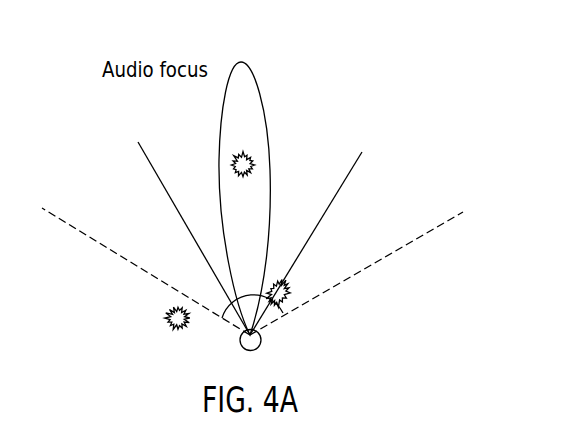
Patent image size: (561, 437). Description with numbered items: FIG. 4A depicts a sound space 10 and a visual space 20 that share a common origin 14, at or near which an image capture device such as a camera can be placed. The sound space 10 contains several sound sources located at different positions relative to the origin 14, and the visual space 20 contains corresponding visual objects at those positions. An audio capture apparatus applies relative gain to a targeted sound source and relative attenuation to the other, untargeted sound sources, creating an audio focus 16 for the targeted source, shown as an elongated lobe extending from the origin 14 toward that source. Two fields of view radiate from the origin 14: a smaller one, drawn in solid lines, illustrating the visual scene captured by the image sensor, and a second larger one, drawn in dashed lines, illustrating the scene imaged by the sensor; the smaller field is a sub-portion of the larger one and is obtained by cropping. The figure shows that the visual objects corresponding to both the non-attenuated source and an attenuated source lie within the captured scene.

The sound space 10 is at (371, 44).
The visual space 20 is at (371, 85).
The origin 14 is at (261, 341).
The audio focus 16 is at (260, 104).